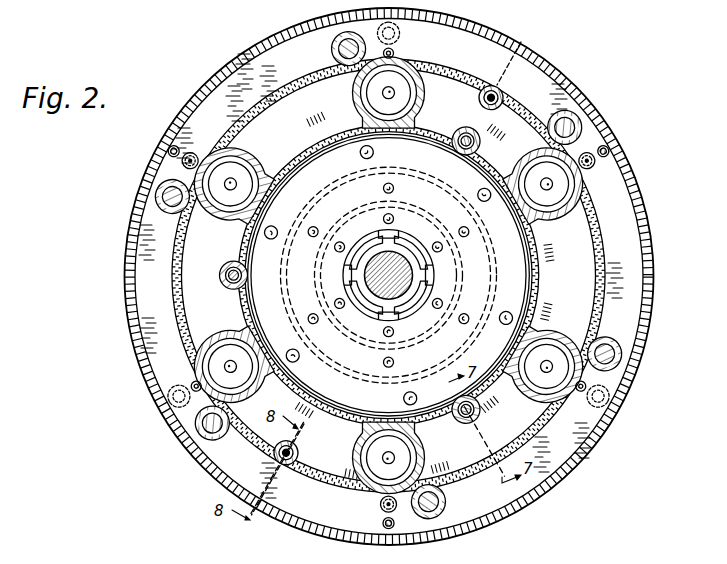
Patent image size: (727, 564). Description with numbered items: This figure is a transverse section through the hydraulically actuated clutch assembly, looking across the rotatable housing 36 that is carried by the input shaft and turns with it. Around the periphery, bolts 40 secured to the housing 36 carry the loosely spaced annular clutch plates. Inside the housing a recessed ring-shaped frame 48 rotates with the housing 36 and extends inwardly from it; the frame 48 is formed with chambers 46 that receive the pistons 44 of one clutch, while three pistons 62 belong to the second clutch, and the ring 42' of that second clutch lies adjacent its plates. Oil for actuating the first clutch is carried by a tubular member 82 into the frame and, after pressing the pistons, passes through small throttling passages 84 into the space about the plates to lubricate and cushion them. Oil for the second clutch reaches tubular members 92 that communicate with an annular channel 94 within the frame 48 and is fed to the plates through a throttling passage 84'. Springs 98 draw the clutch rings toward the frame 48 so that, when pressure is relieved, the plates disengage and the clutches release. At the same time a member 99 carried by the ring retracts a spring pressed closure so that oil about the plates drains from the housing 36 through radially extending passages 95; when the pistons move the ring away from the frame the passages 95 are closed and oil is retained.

The housing 36 is at (619, 410).
The bolts 40 is at (338, 48).
The ring 42' is at (408, 295).
The pistons 44 is at (370, 100).
The chambers 46 is at (420, 99).
The ring-shaped frame 48 is at (605, 292).
The pistons 62 is at (224, 220).
The tubular member 82 is at (378, 30).
The throttling passages 84 is at (388, 354).
The throttling passage 84' is at (373, 236).
The tubular members 92 is at (194, 153).
The annular channel 94 is at (632, 242).
The radially extending passages 95 is at (506, 72).
The springs 98 is at (464, 152).
The member 99 is at (500, 98).